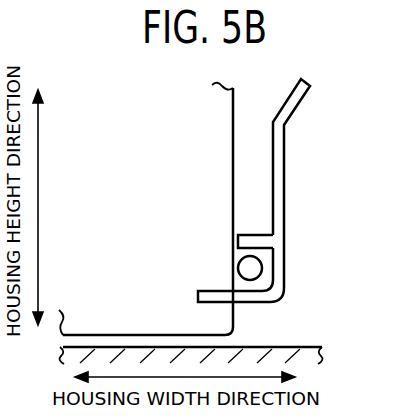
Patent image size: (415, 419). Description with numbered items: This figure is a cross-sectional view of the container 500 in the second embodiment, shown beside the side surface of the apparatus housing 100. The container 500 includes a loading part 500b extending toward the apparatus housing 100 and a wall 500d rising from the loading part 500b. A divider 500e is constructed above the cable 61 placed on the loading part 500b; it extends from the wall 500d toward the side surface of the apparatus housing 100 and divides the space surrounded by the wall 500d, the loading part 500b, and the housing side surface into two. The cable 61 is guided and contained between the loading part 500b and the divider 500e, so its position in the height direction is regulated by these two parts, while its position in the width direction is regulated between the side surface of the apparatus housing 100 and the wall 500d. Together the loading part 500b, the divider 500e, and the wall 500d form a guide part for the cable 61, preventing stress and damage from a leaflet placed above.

The apparatus housing 100 is at (234, 103).
The container 500 is at (264, 190).
The loading part 500b is at (220, 291).
The wall 500d is at (285, 250).
The divider 500e is at (253, 240).
The cable 61 is at (252, 268).